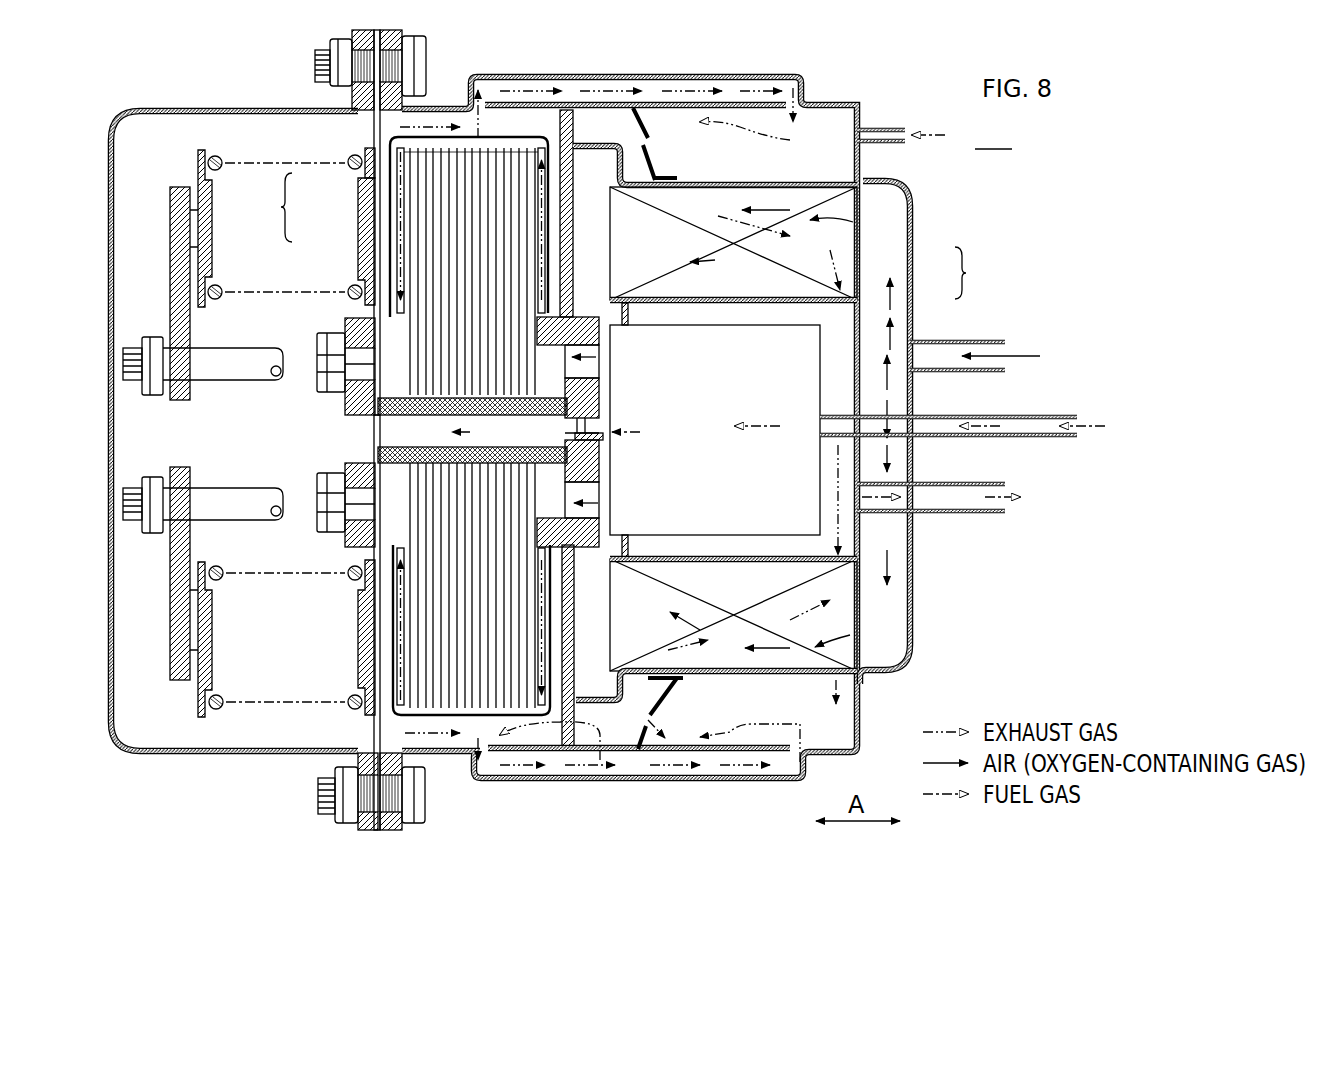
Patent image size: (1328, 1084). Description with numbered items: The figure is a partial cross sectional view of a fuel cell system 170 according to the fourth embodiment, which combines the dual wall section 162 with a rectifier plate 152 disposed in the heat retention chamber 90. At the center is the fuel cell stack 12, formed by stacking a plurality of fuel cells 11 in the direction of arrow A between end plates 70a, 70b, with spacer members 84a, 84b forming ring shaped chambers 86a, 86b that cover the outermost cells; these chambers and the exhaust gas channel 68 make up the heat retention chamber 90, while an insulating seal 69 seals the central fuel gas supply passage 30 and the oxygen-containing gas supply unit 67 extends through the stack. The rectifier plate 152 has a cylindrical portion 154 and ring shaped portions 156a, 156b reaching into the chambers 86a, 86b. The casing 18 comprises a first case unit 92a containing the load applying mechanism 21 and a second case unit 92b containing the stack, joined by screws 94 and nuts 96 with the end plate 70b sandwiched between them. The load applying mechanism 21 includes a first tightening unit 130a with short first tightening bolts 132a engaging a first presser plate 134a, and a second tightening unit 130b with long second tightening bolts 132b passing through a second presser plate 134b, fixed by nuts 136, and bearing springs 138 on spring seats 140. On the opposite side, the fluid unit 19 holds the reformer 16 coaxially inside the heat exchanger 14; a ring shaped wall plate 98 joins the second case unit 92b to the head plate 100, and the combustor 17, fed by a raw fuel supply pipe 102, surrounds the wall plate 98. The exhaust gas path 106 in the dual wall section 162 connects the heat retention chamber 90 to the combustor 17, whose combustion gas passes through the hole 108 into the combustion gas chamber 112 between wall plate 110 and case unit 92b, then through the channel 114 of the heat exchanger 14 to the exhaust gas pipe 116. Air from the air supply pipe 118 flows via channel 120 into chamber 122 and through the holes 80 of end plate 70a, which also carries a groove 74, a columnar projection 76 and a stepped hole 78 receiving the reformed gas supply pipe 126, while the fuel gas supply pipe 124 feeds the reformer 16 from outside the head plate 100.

The fuel cell 11 is at (435, 713).
The fuel cell stack 12 is at (484, 135).
The heat exchanger 14 is at (872, 255).
The reformer 16 is at (795, 347).
The combustor 17 is at (787, 103).
The casing 18 is at (822, 92).
The fluid unit 19 is at (977, 273).
The load applying mechanism 21 is at (291, 428).
The fuel gas supply passage 30 is at (392, 433).
The oxygen-containing gas supply unit 67 is at (535, 363).
The exhaust gas channel 68 is at (367, 178).
The insulating seal 69 is at (398, 447).
The end plate 70a is at (573, 229).
The end plate 70b is at (378, 729).
The groove 74 is at (594, 705).
The columnar projection 76 is at (600, 445).
The stepped hole 78 is at (600, 460).
The hole 80 is at (598, 490).
The spacer member 84a is at (560, 255).
The spacer member 84b is at (398, 266).
The ring shaped chamber 86a is at (540, 240).
The ring shaped chamber 86b is at (375, 213).
The heat retention chamber 90 is at (272, 207).
The first case unit 92a is at (200, 108).
The second case unit 92b is at (408, 108).
The screw 94 is at (412, 48).
The nut 96 is at (318, 65).
The wall plate 98 is at (832, 673).
The head plate 100 is at (914, 594).
The raw fuel supply pipe 102 is at (888, 130).
The exhaust gas path 106 is at (590, 83).
The hole 108 is at (668, 707).
The wall plate 110 is at (640, 184).
The combustion gas chamber 112 is at (615, 750).
The channel 114 is at (780, 617).
The exhaust gas pipe 116 is at (968, 516).
The air supply pipe 118 is at (990, 341).
The channel 120 is at (842, 218).
The chamber 122 is at (612, 634).
The fuel gas supply pipe 124 is at (1043, 414).
The reformed gas supply pipe 126 is at (603, 430).
The first tightening unit 130a is at (342, 452).
The second tightening unit 130b is at (194, 522).
The first tightening bolt 132a is at (322, 360).
The second tightening bolt 132b is at (128, 368).
The first presser plate 134a is at (354, 413).
The second presser plate 134b is at (175, 278).
The nut 136 is at (155, 477).
The spring 138 is at (212, 716).
The spring seat 140 is at (362, 648).
The rectifier plate 152 is at (517, 742).
The cylindrical portion 154 is at (380, 127).
The ring shaped portion 156a is at (628, 312).
The ring shaped portion 156b is at (372, 299).
The dual wall section 162 is at (697, 77).
The fuel cell system 170 is at (998, 137).